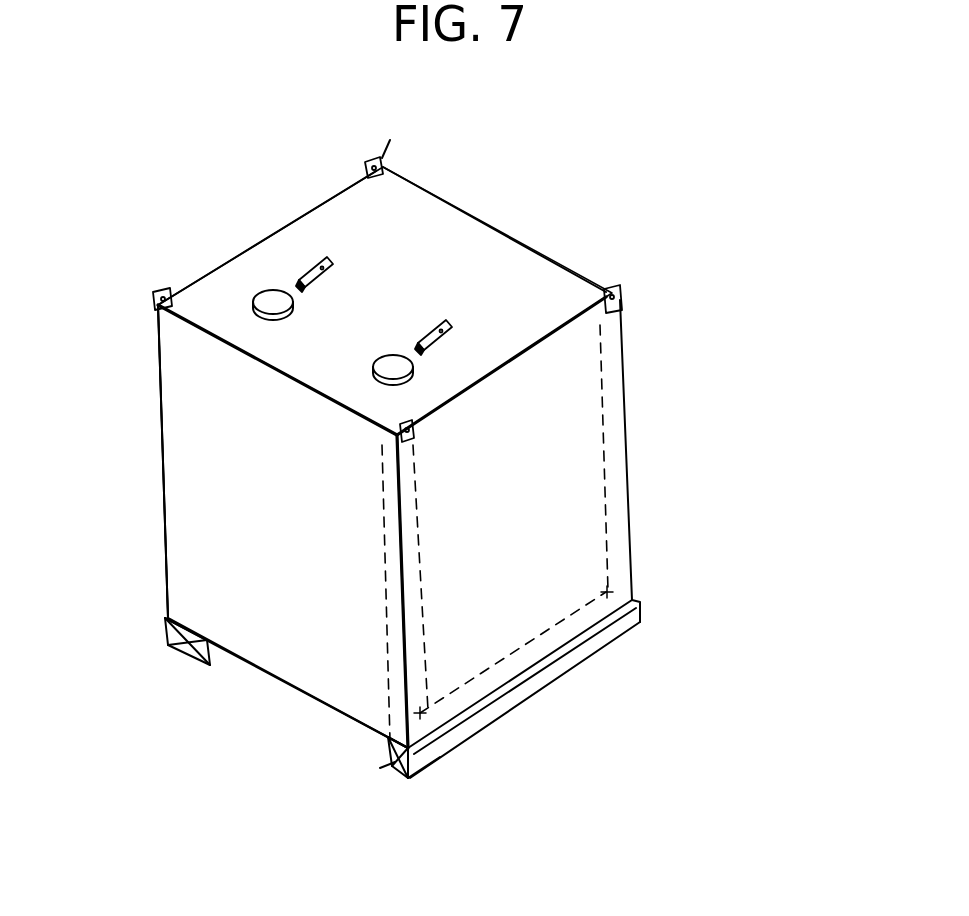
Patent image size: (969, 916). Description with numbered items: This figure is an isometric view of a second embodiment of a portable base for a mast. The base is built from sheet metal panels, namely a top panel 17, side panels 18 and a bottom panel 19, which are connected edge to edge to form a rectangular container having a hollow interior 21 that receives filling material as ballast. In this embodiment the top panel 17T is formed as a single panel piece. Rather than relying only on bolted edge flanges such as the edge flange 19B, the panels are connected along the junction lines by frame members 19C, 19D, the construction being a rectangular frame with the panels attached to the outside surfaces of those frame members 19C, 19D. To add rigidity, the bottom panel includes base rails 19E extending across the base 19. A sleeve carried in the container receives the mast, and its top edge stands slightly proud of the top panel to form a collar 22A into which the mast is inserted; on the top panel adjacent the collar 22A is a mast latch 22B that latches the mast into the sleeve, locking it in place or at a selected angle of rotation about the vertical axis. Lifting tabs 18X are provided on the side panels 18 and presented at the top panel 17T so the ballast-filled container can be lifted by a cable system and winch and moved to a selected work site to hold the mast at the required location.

The top panel 17 is at (245, 333).
The top panel 17T is at (540, 288).
The side panels 18 is at (243, 588).
The lifting tabs 18X is at (417, 432).
The bottom panel 19 is at (297, 688).
The edge flange 19B is at (530, 652).
The frame member 19C is at (393, 438).
The frame member 19D is at (620, 437).
The base rails 19E is at (430, 753).
The hollow interior 21 is at (122, 534).
The collar 22A is at (266, 296).
The mast latch 22B is at (333, 273).